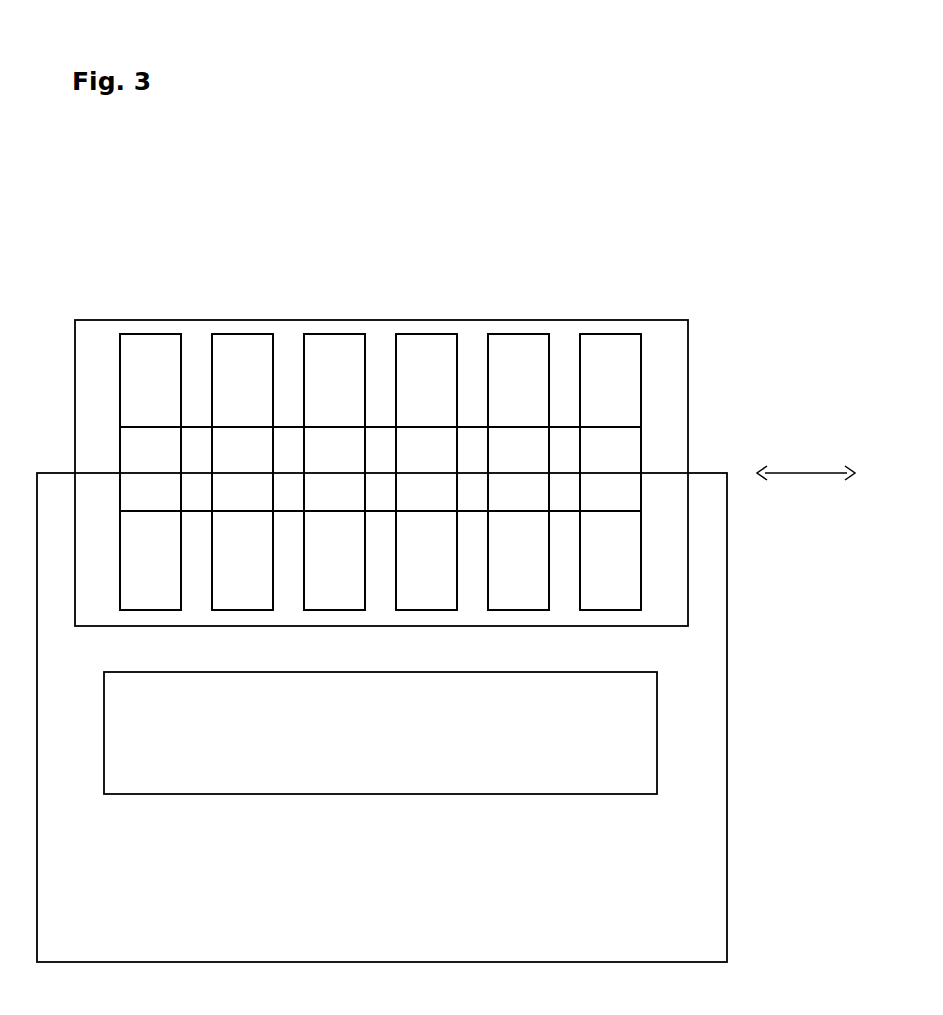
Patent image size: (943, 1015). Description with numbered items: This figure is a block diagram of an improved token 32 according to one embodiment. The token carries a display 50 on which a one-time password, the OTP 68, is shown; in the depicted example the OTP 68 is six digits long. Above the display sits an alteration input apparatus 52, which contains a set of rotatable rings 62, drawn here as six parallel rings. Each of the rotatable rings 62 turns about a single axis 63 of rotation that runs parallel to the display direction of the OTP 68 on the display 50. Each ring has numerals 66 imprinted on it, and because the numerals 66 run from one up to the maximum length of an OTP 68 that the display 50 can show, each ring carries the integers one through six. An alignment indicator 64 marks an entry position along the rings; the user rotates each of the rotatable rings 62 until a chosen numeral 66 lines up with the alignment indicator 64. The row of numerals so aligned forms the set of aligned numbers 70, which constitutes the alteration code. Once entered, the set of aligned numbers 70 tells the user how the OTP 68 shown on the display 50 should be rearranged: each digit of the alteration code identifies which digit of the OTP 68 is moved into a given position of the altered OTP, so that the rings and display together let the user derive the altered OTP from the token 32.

The improved token 32 is at (727, 548).
The display 50 is at (657, 672).
The alteration input apparatus 52 is at (688, 320).
The rotatable rings 62 is at (92, 324).
The axis of rotation 63 is at (787, 473).
The alignment indicator 64 is at (112, 473).
The numerals 66 is at (123, 389).
The OTP 68 is at (110, 710).
The set of aligned numbers 70 is at (641, 427).